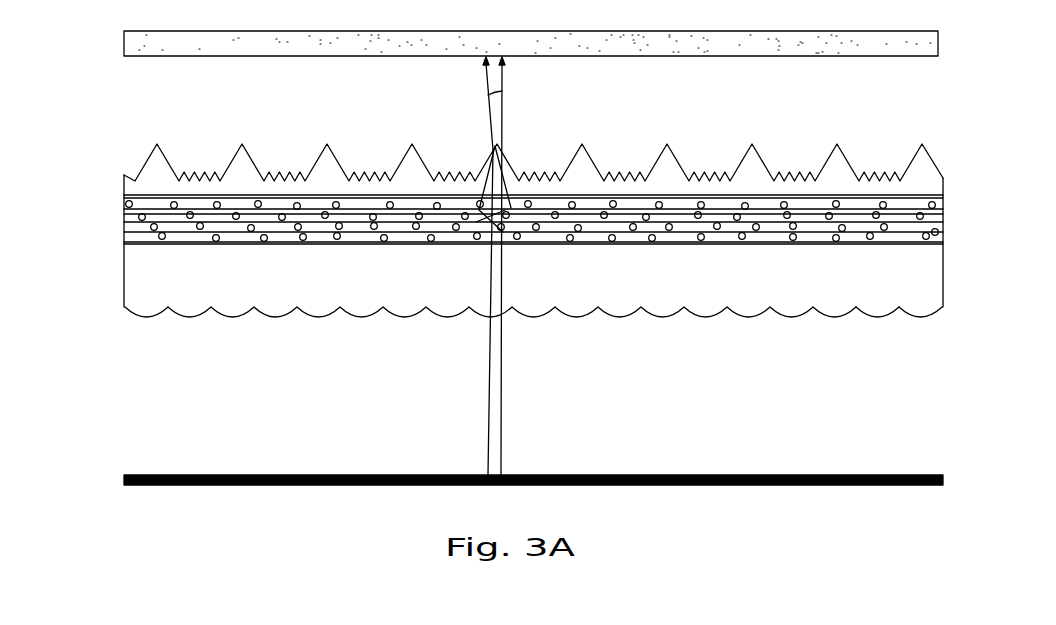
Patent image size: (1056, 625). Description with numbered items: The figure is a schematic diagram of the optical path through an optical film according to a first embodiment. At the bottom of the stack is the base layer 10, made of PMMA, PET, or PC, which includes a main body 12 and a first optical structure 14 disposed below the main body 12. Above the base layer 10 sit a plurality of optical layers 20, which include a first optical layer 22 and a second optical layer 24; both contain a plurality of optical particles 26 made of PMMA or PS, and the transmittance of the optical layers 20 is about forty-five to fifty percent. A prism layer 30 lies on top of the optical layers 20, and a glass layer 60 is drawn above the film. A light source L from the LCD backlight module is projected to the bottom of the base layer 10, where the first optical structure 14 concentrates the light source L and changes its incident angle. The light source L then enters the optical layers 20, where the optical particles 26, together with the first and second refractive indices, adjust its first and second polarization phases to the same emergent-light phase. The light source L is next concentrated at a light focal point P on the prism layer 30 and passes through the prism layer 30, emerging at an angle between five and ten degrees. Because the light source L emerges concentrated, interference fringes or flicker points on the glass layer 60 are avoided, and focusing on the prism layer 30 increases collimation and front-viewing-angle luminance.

The base layer 10 is at (968, 277).
The main body 12 is at (742, 300).
The first optical structure 14 is at (880, 318).
The plurality of optical layers 20 is at (540, 223).
The first optical layer 22 is at (125, 232).
The second optical layer 24 is at (125, 209).
The optical particles 26 is at (939, 232).
The prism layer 30 is at (936, 188).
The glass layer 60 is at (940, 46).
The light source L is at (930, 474).
The light focal point P is at (499, 150).